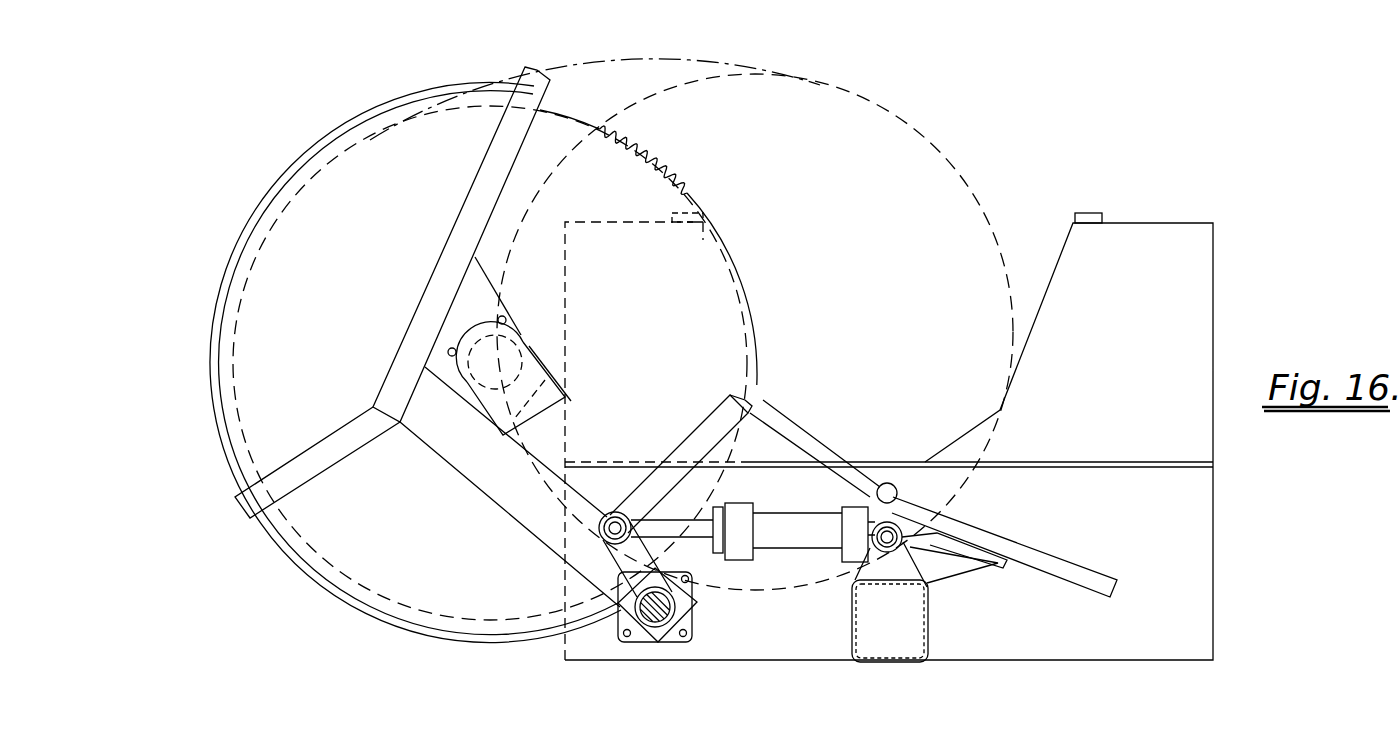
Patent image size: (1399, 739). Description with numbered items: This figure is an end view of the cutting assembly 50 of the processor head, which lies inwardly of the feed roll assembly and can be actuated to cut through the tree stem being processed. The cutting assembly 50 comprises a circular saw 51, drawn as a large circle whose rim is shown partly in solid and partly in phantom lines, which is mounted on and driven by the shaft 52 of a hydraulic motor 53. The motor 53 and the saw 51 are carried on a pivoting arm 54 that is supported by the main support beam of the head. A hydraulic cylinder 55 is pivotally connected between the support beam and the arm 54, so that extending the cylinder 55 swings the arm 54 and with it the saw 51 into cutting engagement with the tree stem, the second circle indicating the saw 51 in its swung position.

The cutting assembly 50 is at (190, 302).
The circular saw 51 is at (573, 120).
The shaft 52 is at (512, 343).
The hydraulic motor 53 is at (478, 334).
The pivoting arm 54 is at (676, 400).
The hydraulic cylinder 55 is at (792, 521).